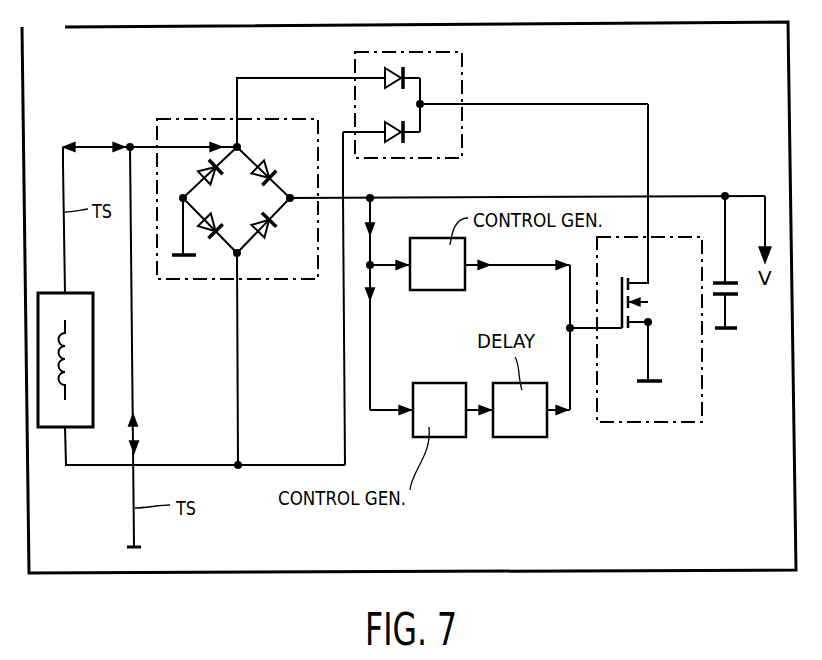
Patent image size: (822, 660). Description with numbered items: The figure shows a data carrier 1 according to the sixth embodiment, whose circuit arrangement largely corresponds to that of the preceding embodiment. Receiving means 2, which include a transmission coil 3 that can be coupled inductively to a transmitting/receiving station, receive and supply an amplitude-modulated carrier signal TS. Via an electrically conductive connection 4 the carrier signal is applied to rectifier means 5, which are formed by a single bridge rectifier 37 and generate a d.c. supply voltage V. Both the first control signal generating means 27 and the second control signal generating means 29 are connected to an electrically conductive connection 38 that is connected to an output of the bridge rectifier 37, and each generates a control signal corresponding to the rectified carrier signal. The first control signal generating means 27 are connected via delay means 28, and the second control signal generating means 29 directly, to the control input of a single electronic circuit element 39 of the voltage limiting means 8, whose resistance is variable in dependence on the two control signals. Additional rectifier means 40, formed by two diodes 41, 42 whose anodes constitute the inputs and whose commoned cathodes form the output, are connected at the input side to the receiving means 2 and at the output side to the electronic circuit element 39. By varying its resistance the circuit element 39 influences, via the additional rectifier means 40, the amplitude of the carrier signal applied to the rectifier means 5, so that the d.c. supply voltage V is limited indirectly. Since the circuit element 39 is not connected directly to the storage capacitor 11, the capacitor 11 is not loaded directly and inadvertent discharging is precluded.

The data carrier 1 is at (145, 579).
The receiving means 2 is at (77, 413).
The transmission coil 3 is at (66, 380).
The electrically conductive connection 4 is at (130, 277).
The rectifier means 5 is at (201, 195).
The bridge rectifier 37 is at (277, 247).
The additional rectifier means 40 is at (438, 97).
The diode 41 is at (383, 75).
The diode 42 is at (383, 129).
The electrically conductive connection 38 is at (534, 193).
The second control signal generating means 29 is at (442, 295).
The first control signal generating means 27 is at (443, 438).
The delay means 28 is at (525, 438).
The voltage limiting means 8 is at (636, 307).
The electronic circuit element 39 is at (635, 292).
The capacitor 11 is at (732, 300).